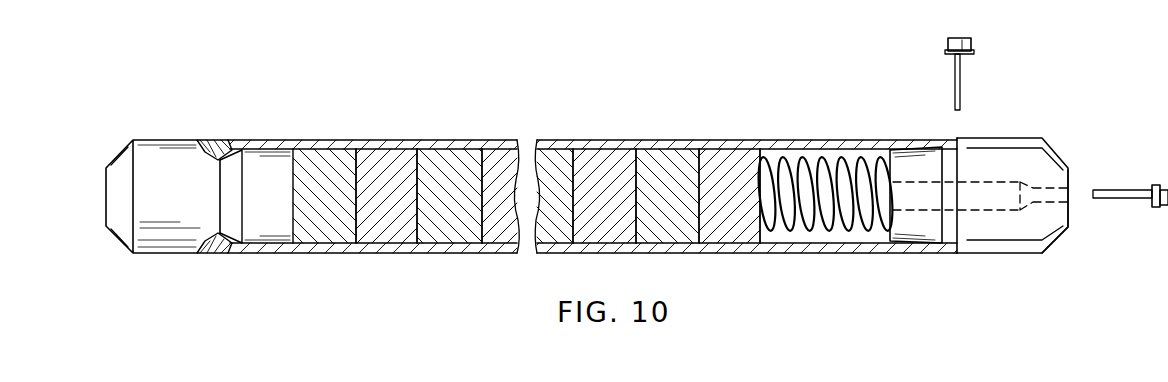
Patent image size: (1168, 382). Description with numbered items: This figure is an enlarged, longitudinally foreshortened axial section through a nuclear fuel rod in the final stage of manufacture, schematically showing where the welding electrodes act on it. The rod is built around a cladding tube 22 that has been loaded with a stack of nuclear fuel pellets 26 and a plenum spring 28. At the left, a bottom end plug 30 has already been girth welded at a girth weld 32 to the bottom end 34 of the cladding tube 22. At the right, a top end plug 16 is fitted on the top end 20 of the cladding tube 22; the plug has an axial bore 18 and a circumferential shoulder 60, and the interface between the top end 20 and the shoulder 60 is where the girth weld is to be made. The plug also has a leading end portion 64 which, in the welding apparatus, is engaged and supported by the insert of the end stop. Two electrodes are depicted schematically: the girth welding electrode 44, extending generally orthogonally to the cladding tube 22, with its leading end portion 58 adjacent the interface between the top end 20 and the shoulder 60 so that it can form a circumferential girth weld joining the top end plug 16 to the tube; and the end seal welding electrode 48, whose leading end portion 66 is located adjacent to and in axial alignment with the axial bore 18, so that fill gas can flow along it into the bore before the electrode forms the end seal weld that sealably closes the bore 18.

The top end plug 16 is at (1013, 150).
The axial bore 18 is at (1070, 192).
The top end 20 is at (942, 138).
The cladding tube 22 is at (467, 140).
The nuclear fuel pellets 26 is at (365, 163).
The plenum spring 28 is at (802, 160).
The bottom end plug 30 is at (155, 153).
The girth weld 32 is at (218, 138).
The bottom end 34 is at (253, 138).
The girth welding electrode 44 is at (962, 63).
The end seal welding electrode 48 is at (1140, 200).
The leading end portion 58 is at (955, 93).
The circumferential shoulder 60 is at (980, 138).
The leading end portion 64 is at (1060, 233).
The leading end portion 66 is at (1118, 190).